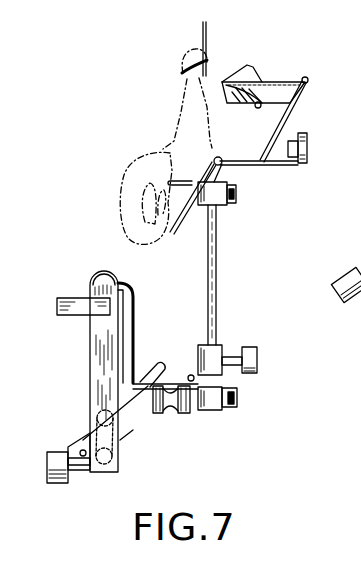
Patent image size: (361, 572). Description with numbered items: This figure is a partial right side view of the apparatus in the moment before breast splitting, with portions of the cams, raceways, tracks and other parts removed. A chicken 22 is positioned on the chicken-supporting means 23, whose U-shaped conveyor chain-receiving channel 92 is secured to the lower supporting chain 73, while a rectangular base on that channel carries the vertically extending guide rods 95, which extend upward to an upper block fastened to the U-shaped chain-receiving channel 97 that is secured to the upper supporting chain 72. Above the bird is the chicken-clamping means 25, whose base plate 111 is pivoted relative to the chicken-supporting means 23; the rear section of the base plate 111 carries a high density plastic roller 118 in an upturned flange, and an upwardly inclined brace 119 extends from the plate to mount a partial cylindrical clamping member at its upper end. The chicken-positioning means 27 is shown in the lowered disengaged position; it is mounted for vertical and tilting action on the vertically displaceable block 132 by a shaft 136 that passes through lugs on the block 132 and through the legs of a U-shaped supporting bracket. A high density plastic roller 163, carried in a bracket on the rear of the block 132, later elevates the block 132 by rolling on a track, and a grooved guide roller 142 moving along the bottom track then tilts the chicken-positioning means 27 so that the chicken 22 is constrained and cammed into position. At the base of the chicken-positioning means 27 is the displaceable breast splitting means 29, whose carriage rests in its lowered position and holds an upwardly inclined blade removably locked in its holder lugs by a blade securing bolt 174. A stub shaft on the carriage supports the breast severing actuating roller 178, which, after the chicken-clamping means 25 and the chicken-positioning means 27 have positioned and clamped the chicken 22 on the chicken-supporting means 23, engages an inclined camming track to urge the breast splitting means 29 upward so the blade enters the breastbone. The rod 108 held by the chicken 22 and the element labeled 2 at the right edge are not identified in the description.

The rod 108 is at (208, 32).
The chicken 22 is at (149, 149).
The chicken-clamping means 25 is at (273, 80).
The upwardly inclined brace 119 is at (290, 113).
The roller 118 is at (308, 144).
The base plate 111 is at (240, 164).
The upper supporting chain 72 is at (237, 192).
The U-shaped chain-receiving channel 97 is at (221, 196).
The chicken-supporting means 23 is at (172, 232).
The guide rods 95 is at (216, 286).
The vertically displaceable block 132 is at (217, 349).
The roller 163 is at (256, 350).
The shaft 136 is at (190, 375).
The U-shaped conveyor chain-receiving channel 92 is at (210, 411).
The lower supporting chain 73 is at (238, 396).
The guide roller 142 is at (161, 409).
The chicken-positioning means 27 is at (89, 348).
The blade securing bolt 174 is at (80, 449).
The breast severing actuating roller 178 is at (56, 484).
The breast splitting means 29 is at (80, 474).
The block 2 is at (352, 330).